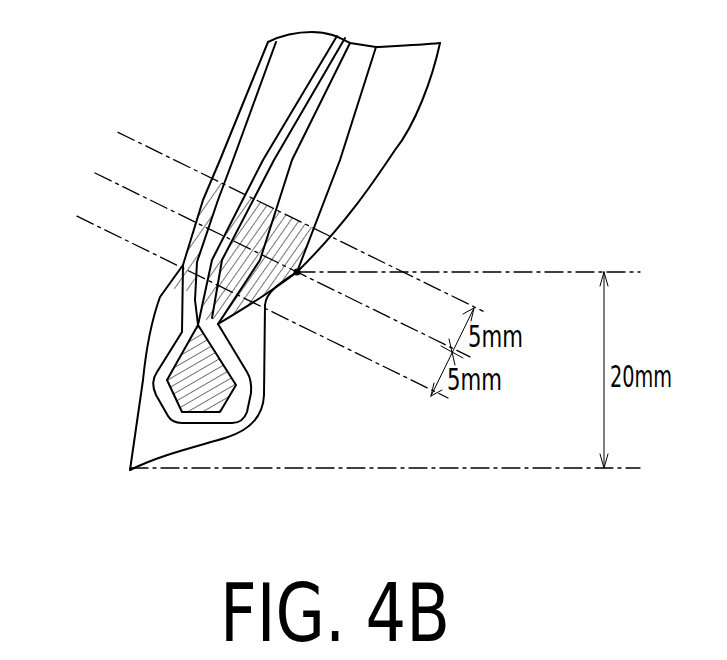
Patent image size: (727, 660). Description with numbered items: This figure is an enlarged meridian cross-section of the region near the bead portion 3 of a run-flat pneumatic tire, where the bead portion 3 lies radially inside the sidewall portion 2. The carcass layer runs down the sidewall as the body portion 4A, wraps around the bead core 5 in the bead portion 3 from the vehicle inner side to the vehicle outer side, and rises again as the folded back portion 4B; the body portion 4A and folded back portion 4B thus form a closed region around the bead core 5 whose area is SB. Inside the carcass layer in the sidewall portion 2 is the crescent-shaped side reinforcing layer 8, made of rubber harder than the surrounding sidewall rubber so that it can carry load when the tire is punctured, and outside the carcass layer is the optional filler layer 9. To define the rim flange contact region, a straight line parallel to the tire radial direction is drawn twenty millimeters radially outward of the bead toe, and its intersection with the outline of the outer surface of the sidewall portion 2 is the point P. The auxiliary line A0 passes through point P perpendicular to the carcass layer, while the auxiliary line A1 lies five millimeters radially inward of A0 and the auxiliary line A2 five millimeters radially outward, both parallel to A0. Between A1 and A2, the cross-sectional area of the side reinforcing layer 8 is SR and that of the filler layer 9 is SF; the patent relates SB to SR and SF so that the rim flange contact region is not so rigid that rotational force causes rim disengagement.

The sidewall portion 2 is at (466, 72).
The bead portion 3 is at (288, 398).
The body portion 4A is at (170, 357).
The folded back portion 4B is at (240, 376).
The bead core 5 is at (176, 403).
The side reinforcing layer 8 is at (273, 92).
The filler layer 9 is at (342, 117).
The cross-sectional area of the side reinforcing layer portion SR is at (232, 195).
The cross-sectional area of the filler layer portion SF is at (297, 222).
The area of the closed region SB is at (213, 396).
The intersection point P is at (298, 276).
The auxiliary line A0 is at (267, 251).
The auxiliary line A1 is at (245, 295).
The auxiliary line A2 is at (285, 207).